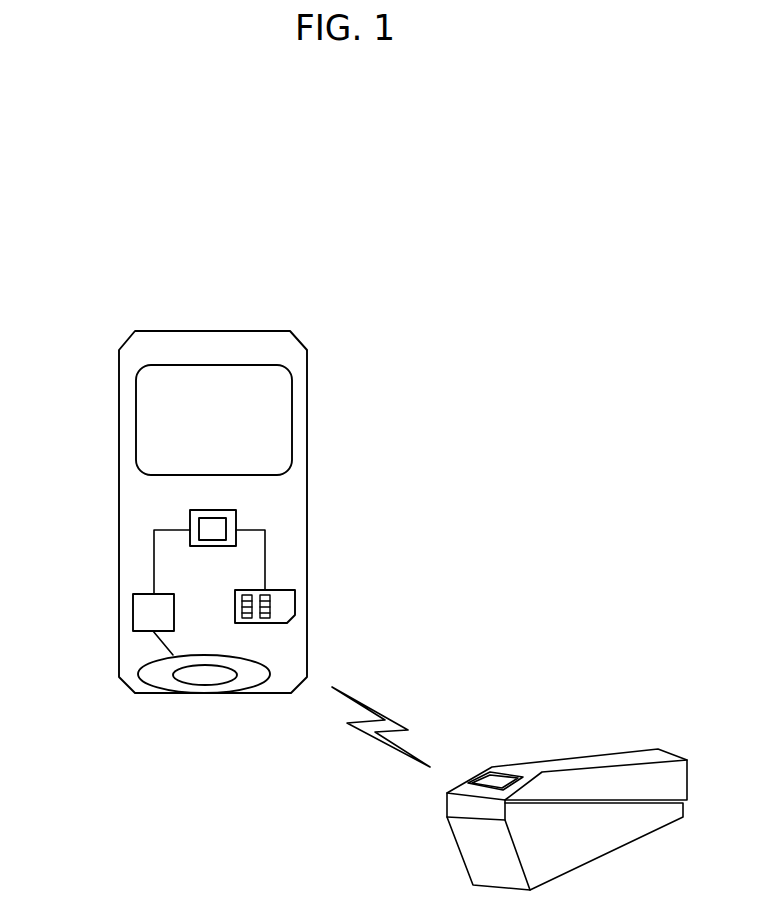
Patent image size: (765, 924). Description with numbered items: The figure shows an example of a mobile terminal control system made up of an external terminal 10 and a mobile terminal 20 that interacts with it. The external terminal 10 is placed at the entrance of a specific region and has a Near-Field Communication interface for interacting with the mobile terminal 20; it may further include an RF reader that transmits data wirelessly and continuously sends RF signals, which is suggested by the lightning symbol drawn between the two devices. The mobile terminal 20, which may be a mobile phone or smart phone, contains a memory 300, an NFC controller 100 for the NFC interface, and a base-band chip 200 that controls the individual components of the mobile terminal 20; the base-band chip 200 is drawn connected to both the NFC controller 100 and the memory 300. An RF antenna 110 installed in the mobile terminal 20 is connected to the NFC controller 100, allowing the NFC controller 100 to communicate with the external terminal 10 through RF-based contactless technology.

The external terminal 10 is at (566, 758).
The mobile terminal 20 is at (307, 397).
The NFC controller 100 is at (133, 612).
The RF antenna 110 is at (178, 688).
The base-band chip 200 is at (236, 518).
The memory 300 is at (295, 600).